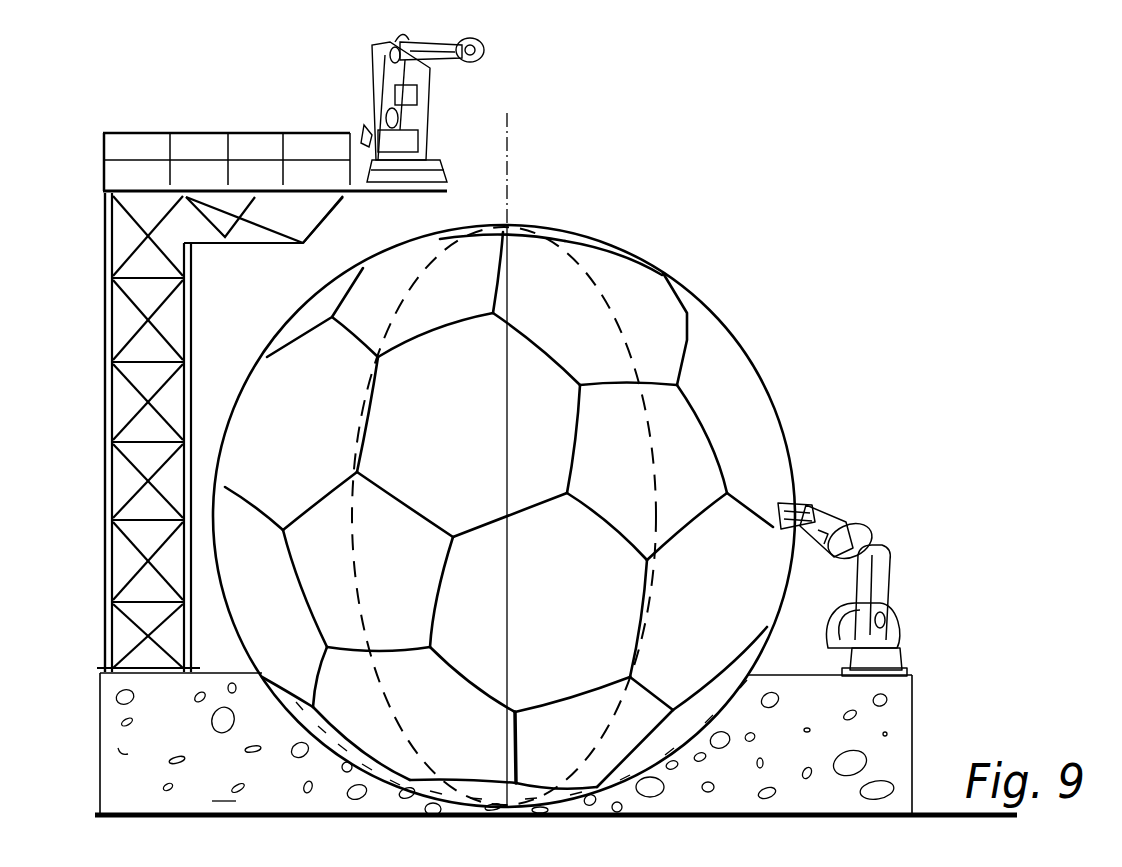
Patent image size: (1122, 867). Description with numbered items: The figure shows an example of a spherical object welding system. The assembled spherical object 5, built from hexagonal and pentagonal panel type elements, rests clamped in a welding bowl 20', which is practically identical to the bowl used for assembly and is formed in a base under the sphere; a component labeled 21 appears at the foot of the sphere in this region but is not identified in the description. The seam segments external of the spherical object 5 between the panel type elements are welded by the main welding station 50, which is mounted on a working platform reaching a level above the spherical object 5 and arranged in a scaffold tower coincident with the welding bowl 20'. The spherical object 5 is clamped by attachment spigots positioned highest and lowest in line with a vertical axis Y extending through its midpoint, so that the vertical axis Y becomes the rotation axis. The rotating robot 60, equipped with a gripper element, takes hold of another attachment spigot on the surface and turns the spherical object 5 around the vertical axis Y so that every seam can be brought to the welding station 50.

The spherical object 5 is at (788, 385).
The welding bowl 20' is at (572, 744).
The support cradle band 21 is at (778, 674).
The main welding station 50 is at (360, 60).
The rotating robot 60 is at (902, 572).
The vertical axis Y is at (507, 158).